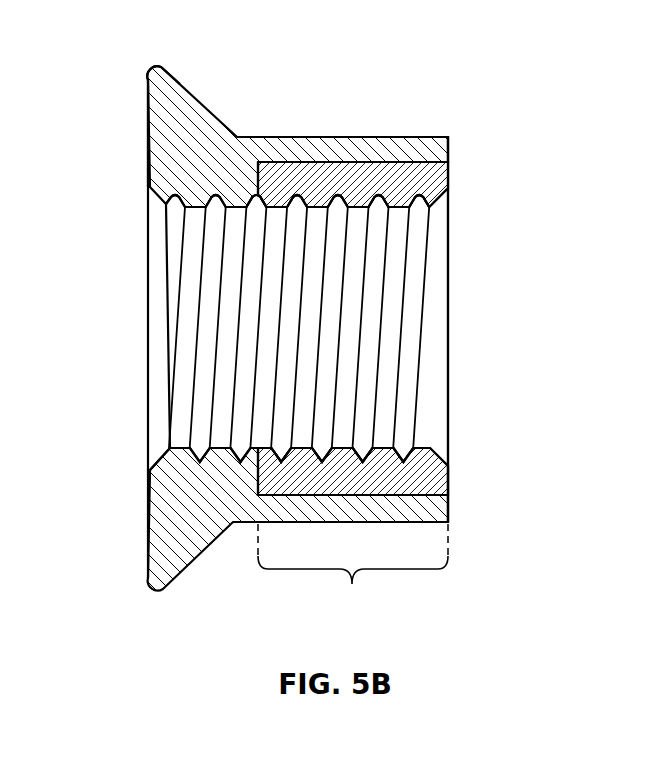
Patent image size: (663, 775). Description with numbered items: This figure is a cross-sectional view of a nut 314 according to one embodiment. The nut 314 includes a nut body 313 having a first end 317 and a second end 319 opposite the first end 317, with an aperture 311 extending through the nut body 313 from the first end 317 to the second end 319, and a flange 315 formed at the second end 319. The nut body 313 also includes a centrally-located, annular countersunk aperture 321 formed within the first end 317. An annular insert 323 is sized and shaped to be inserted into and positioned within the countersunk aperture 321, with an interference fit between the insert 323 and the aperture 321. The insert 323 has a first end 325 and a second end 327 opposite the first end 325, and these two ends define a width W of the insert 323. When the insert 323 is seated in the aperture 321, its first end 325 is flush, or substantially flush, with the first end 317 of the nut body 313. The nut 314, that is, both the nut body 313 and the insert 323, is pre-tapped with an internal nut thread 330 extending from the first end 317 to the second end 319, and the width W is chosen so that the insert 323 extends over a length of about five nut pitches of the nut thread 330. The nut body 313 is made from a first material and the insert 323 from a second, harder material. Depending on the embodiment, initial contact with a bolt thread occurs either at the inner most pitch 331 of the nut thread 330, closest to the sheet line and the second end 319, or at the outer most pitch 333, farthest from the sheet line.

The nut 314 is at (322, 71).
The flange 315 is at (167, 80).
The second end 319 is at (148, 107).
The countersunk aperture 321 is at (256, 187).
The nut body 313 is at (317, 148).
The annular insert 323 is at (390, 176).
The first end 317 is at (448, 150).
The aperture 311 is at (221, 268).
The nut thread 330 is at (370, 278).
The inner most pitch 331 is at (183, 445).
The outer most pitch 333 is at (410, 445).
The first end 325 is at (448, 485).
The second end 327 is at (258, 477).
The width W is at (353, 573).